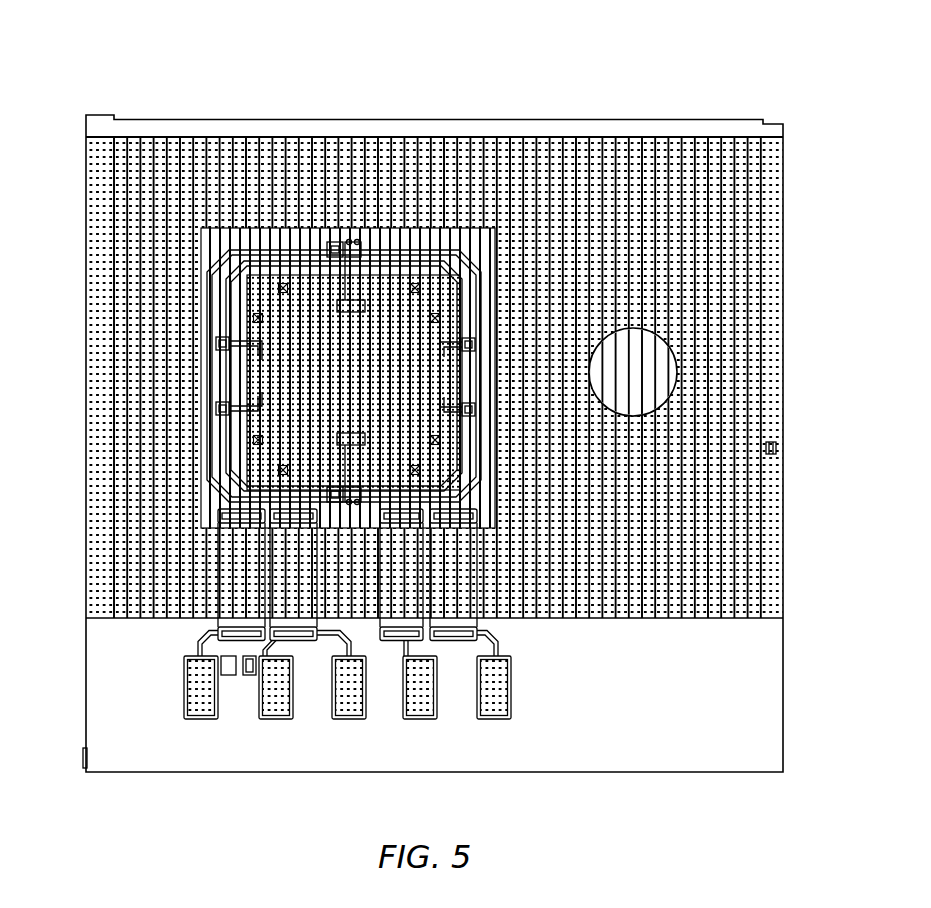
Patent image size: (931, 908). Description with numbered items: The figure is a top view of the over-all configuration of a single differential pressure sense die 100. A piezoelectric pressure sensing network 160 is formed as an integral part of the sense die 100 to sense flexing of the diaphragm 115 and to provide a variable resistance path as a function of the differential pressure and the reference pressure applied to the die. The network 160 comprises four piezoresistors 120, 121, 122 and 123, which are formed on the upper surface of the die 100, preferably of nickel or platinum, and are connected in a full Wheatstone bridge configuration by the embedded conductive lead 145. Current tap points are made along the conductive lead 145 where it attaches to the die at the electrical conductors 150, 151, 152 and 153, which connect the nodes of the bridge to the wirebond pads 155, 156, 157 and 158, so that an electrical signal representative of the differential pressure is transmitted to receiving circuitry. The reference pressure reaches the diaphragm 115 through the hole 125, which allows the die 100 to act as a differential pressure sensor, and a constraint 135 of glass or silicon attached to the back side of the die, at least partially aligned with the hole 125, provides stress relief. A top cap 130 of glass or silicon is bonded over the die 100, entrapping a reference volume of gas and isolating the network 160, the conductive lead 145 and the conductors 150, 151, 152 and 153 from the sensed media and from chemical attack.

The pressure sense die 100 is at (752, 60).
The diaphragm 115 is at (287, 232).
The piezoresistor 120 is at (358, 242).
The piezoresistor 121 is at (440, 345).
The piezoresistor 122 is at (380, 495).
The piezoresistor 123 is at (252, 350).
The hole 125 is at (650, 372).
The top cap 130 is at (740, 217).
The constraint 135 is at (778, 402).
The conductive lead 145 is at (207, 432).
The electrical conductor 150 is at (240, 592).
The electrical conductor 151 is at (292, 570).
The electrical conductor 152 is at (408, 580).
The electrical conductor 153 is at (458, 607).
The wirebond pad 155 is at (200, 693).
The wirebond pad 156 is at (346, 717).
The wirebond pad 157 is at (420, 717).
The wirebond pad 158 is at (495, 717).
The piezoelectric pressure sensing network 160 is at (235, 247).